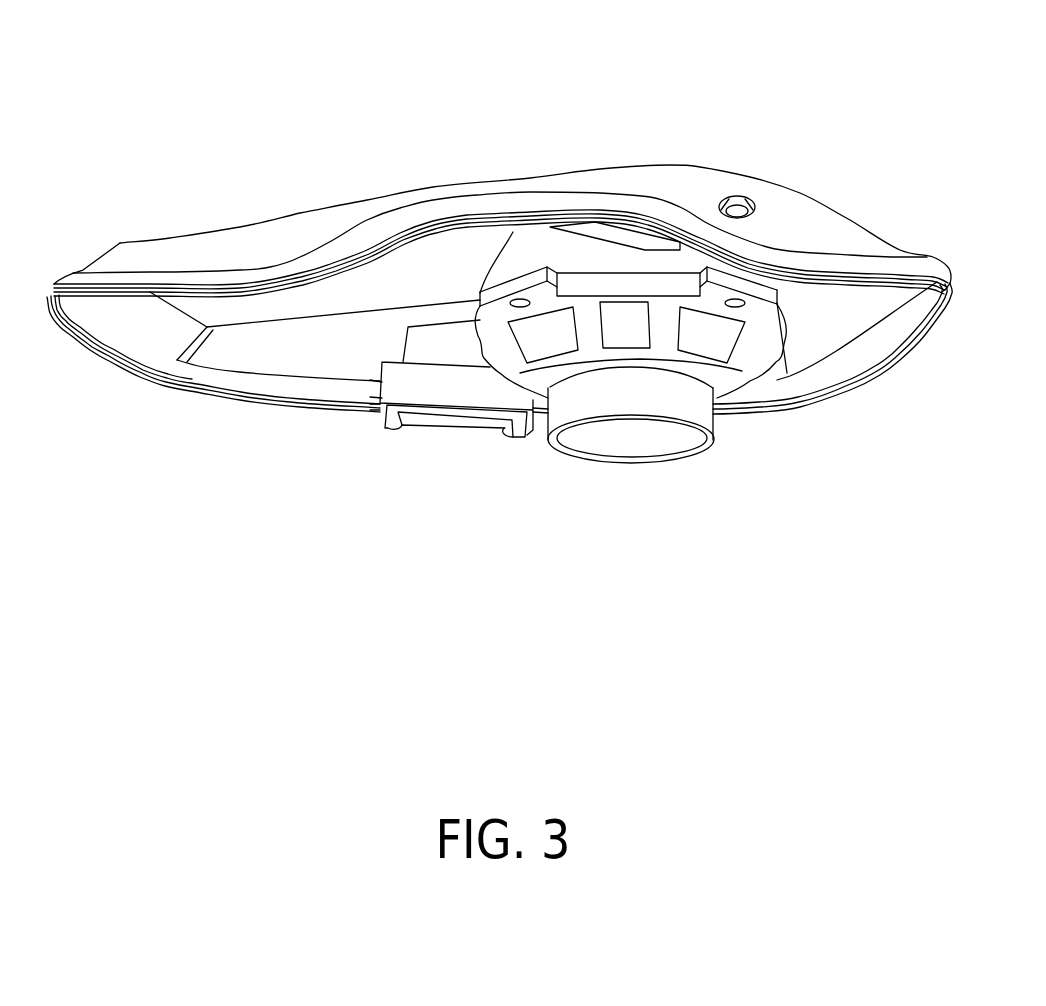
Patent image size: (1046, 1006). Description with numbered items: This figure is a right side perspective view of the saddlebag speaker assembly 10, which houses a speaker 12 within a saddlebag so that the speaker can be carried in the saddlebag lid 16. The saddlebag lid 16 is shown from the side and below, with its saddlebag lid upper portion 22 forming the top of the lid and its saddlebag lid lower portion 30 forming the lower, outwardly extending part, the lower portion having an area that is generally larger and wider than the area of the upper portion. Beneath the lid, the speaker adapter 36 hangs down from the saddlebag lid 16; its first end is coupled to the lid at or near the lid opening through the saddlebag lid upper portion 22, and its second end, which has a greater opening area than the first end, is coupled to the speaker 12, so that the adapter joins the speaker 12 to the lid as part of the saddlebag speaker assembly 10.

The saddlebag speaker assembly 10 is at (346, 155).
The speaker 12 is at (627, 447).
The saddlebag lid 16 is at (170, 250).
The saddlebag lid upper portion 22 is at (297, 213).
The saddlebag lid lower portion 30 is at (50, 279).
The speaker adapter 36 is at (503, 277).